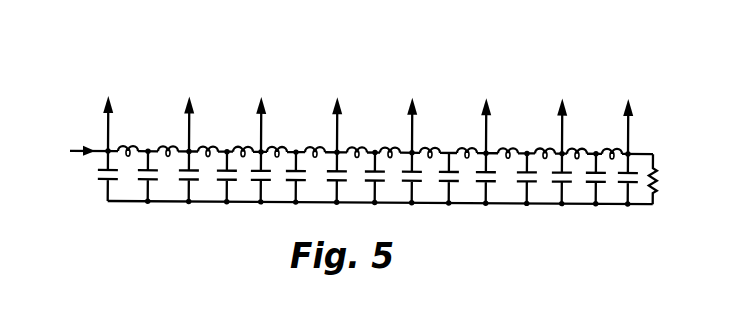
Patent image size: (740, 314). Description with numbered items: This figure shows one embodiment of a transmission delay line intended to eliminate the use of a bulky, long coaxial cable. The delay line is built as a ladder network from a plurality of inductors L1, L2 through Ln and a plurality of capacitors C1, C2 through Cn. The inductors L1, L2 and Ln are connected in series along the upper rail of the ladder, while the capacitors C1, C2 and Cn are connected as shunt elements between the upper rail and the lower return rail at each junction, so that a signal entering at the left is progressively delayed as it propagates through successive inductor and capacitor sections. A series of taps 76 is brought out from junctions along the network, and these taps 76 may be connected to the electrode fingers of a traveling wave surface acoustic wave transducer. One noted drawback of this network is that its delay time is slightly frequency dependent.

The taps 76 is at (368, 109).
The inductor L1 is at (132, 132).
The inductor L2 is at (167, 132).
The inductor Ln is at (612, 137).
The capacitor C1 is at (96, 176).
The capacitor C2 is at (140, 176).
The capacitor Cn is at (619, 179).